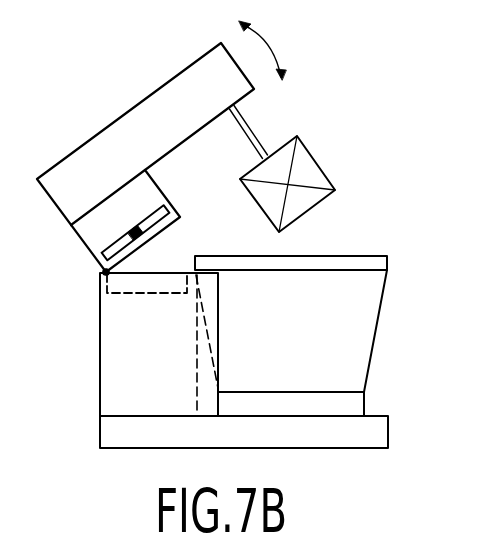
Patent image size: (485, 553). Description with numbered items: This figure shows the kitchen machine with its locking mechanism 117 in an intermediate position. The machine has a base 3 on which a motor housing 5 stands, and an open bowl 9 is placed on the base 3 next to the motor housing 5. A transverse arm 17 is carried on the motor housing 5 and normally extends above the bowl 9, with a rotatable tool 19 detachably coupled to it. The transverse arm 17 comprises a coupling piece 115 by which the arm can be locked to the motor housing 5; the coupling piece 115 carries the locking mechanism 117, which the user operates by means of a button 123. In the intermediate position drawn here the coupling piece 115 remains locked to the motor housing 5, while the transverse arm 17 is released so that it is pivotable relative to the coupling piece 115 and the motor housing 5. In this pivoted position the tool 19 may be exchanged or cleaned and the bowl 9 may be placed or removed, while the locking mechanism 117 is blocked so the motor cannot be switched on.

The base 3 is at (372, 430).
The motor housing 5 is at (120, 352).
The bowl 9 is at (355, 342).
The transverse arm 17 is at (130, 125).
The tool 19 is at (333, 148).
The coupling piece 115 is at (106, 284).
The locking mechanism 117 is at (170, 225).
The button 123 is at (142, 233).